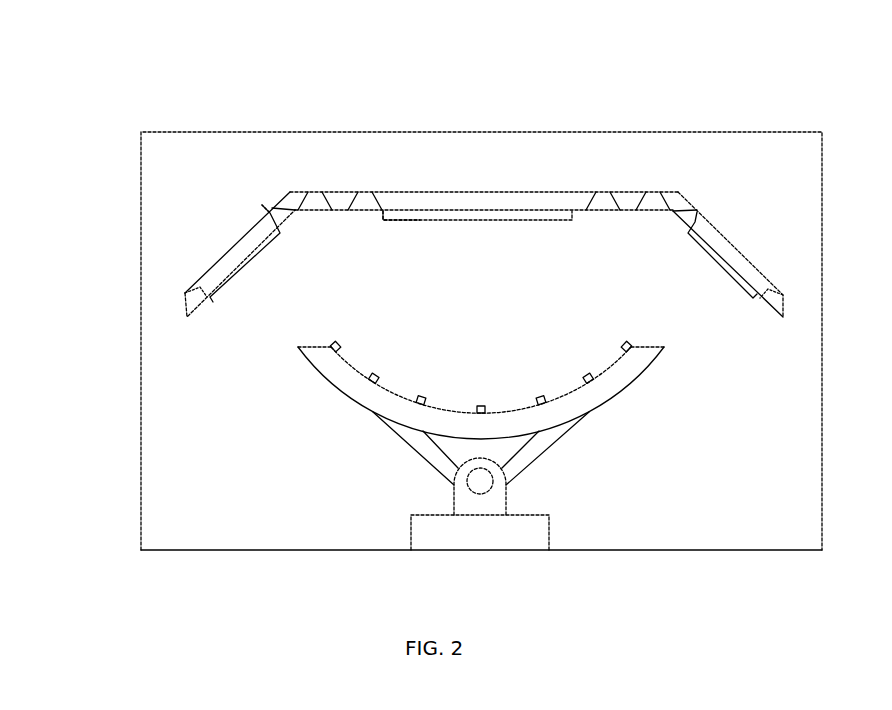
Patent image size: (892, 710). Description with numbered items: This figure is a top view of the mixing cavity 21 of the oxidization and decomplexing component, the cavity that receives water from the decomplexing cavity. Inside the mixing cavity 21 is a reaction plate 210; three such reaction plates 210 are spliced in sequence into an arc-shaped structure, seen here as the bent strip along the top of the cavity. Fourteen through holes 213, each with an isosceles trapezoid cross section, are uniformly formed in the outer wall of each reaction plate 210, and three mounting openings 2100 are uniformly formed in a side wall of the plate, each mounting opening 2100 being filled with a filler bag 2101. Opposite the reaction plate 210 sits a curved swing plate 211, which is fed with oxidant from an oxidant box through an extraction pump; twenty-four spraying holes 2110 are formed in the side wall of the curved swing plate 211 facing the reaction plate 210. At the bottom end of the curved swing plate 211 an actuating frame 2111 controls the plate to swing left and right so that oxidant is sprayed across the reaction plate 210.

The mixing cavity 21 is at (141, 132).
The reaction plate 210 is at (483, 195).
The through hole 213 is at (320, 195).
The mounting opening 2100 is at (573, 212).
The filler bag 2101 is at (407, 213).
The curved swing plate 211 is at (332, 387).
The spraying hole 2110 is at (373, 388).
The actuating frame 2111 is at (493, 512).